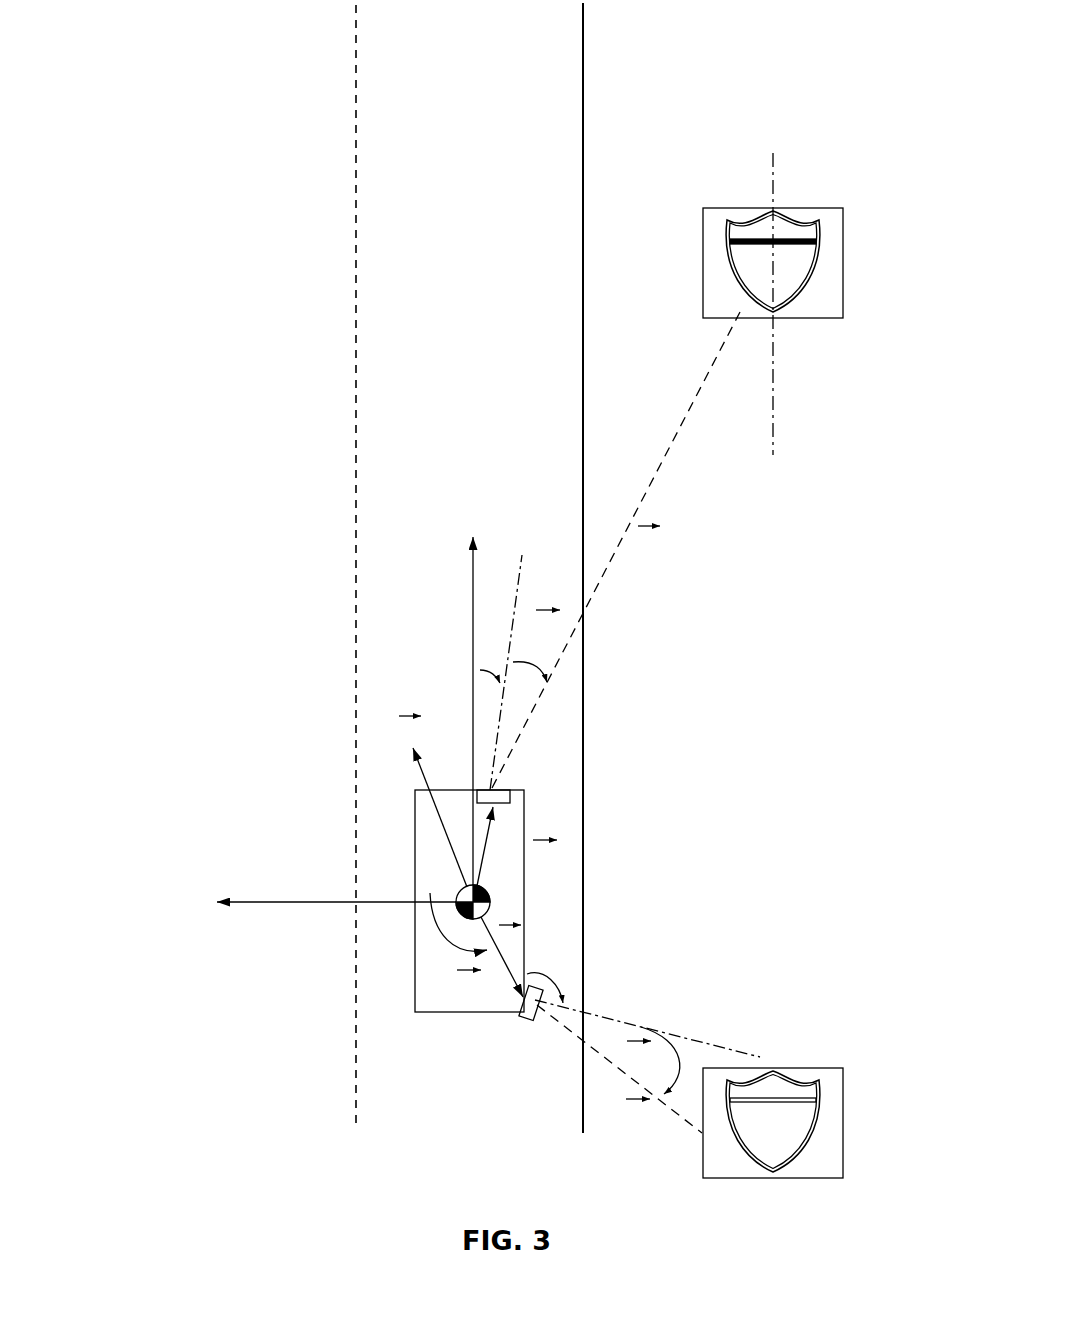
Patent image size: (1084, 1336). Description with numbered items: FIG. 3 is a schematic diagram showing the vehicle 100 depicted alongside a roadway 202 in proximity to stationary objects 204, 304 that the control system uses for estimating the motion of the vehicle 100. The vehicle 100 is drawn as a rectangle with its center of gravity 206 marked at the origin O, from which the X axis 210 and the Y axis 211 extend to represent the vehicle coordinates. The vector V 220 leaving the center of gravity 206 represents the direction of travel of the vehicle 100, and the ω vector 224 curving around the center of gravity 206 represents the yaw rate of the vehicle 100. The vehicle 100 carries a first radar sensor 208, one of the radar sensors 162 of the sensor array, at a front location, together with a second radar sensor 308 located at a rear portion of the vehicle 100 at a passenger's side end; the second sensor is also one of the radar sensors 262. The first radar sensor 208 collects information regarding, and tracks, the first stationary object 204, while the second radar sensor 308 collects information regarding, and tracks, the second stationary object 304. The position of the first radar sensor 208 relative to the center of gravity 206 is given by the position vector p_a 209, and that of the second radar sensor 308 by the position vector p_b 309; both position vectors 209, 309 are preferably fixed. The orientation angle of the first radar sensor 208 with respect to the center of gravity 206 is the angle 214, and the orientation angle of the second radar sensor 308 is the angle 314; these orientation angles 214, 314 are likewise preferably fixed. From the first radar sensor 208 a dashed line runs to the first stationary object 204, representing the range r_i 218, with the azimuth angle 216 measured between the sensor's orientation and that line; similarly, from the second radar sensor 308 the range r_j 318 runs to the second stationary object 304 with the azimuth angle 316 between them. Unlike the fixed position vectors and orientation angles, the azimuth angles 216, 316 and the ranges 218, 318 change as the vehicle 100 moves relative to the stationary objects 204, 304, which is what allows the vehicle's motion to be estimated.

The vehicle 100 is at (437, 1012).
The roadway 202 is at (415, 227).
The first stationary object 204 is at (790, 208).
The center of gravity 206 is at (458, 915).
The first radar sensor 208 is at (523, 795).
The radar sensors 162 is at (591, 770).
The position vector of the first radar sensor 209 is at (560, 862).
The X coordinate axis 210 is at (463, 514).
The Y coordinate axis 211 is at (199, 905).
The orientation angle of the first radar sensor 214 is at (440, 635).
The azimuth angle of the first radar sensor 216 is at (557, 638).
The range of the first radar sensor 218 is at (657, 550).
The velocity vector 220 is at (405, 733).
The yaw rate vector 224 is at (518, 942).
The sensor 262 is at (507, 1032).
The second stationary object 304 is at (790, 1068).
The second radar sensor 308 is at (518, 1019).
The position vector of the second radar sensor 309 is at (442, 987).
The orientation angle of the second radar sensor 314 is at (575, 975).
The azimuth angle of the second radar sensor 316 is at (641, 1027).
The range of the second radar sensor 318 is at (626, 1118).